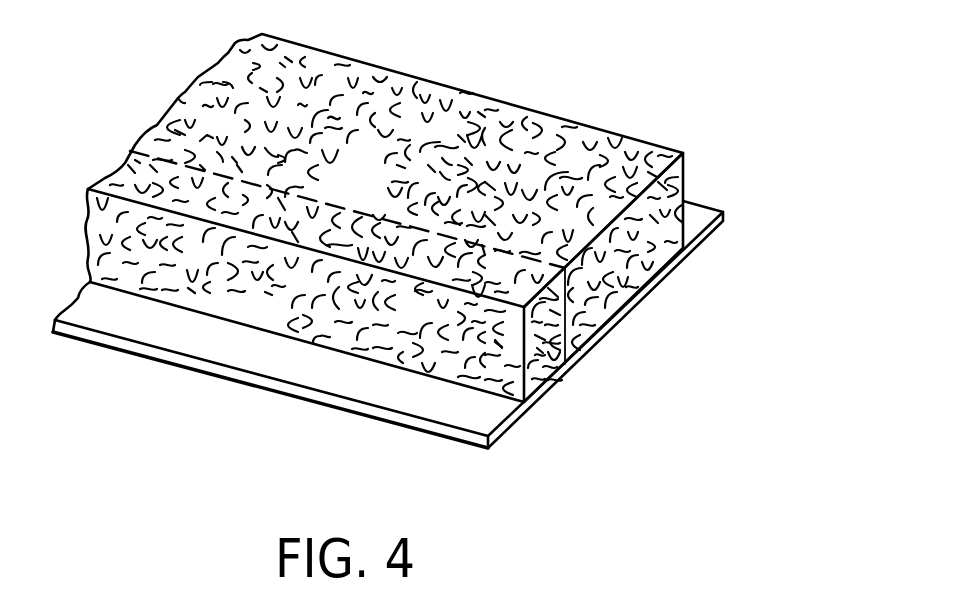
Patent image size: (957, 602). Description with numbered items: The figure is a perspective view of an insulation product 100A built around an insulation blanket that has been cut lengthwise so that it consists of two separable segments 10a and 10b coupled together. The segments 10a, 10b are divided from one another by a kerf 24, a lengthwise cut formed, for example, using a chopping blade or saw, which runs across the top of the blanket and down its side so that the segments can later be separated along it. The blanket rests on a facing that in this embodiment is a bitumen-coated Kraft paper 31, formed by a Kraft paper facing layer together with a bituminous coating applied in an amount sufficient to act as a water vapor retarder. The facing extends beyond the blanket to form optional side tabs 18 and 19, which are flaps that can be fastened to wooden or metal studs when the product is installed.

The separable segment 10a is at (484, 107).
The separable segment 10b is at (117, 168).
The kerf 24 is at (390, 220).
The bitumen-coated Kraft paper 31 is at (577, 363).
The side tab 18 is at (417, 403).
The side tab 19 is at (693, 217).
The insulation product 100A is at (627, 462).